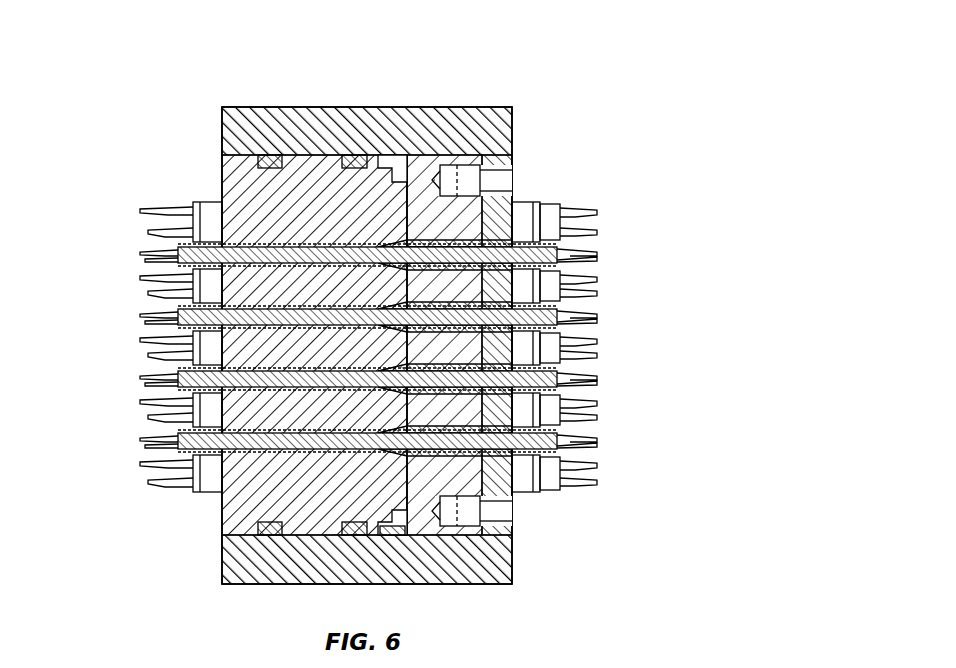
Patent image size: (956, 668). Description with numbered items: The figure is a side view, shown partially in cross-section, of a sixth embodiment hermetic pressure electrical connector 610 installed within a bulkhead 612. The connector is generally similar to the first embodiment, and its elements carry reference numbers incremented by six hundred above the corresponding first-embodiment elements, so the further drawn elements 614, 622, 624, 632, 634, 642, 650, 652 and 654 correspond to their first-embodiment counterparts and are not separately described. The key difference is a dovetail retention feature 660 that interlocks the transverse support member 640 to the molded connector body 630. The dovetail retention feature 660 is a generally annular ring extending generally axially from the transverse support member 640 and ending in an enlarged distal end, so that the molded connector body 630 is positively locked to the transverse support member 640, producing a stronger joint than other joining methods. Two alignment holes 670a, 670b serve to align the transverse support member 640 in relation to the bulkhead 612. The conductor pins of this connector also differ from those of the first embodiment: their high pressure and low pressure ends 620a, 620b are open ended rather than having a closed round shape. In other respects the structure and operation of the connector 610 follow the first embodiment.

The electrical connector 610 is at (122, 82).
The bulkhead 612 is at (480, 107).
The side wall 614 is at (495, 158).
The high pressure end 620a is at (143, 340).
The low pressure end 620b is at (597, 342).
The contact insert 622 is at (197, 293).
The conductive plate 624 is at (372, 245).
The molded connector body 630 is at (225, 195).
The seal 632 is at (225, 160).
The seal 634 is at (350, 157).
The transverse support member 640 is at (447, 157).
The gasket 642 is at (490, 238).
The center block 650 is at (505, 292).
The channel 652 is at (445, 205).
The divider wall 654 is at (418, 170).
The dovetail retention feature 660 is at (390, 155).
The alignment hole 670a is at (472, 182).
The alignment hole 670b is at (472, 512).